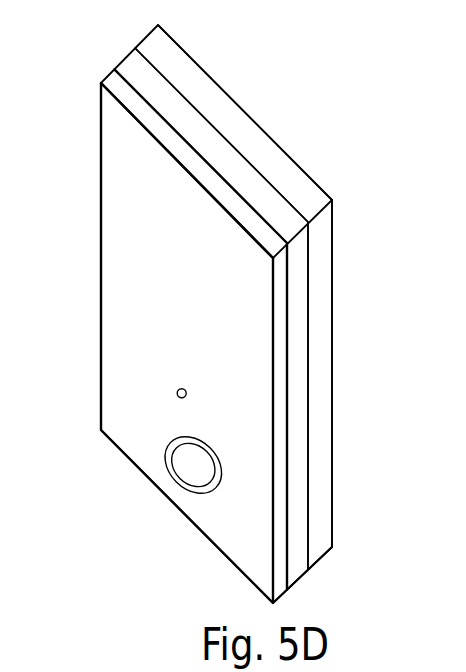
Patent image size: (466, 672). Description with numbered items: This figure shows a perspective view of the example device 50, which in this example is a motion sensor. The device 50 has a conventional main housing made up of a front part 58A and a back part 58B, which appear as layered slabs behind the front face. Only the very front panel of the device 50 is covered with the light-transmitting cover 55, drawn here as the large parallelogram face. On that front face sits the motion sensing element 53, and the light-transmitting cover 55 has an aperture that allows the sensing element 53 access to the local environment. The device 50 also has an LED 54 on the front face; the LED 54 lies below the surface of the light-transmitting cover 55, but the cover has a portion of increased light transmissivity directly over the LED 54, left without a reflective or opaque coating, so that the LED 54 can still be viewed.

The device 50 is at (222, 311).
The motion sensing element 53 is at (167, 450).
The LED 54 is at (187, 397).
The light-transmitting cover 55 is at (128, 280).
The front part 58A is at (135, 63).
The back part 58B is at (320, 242).